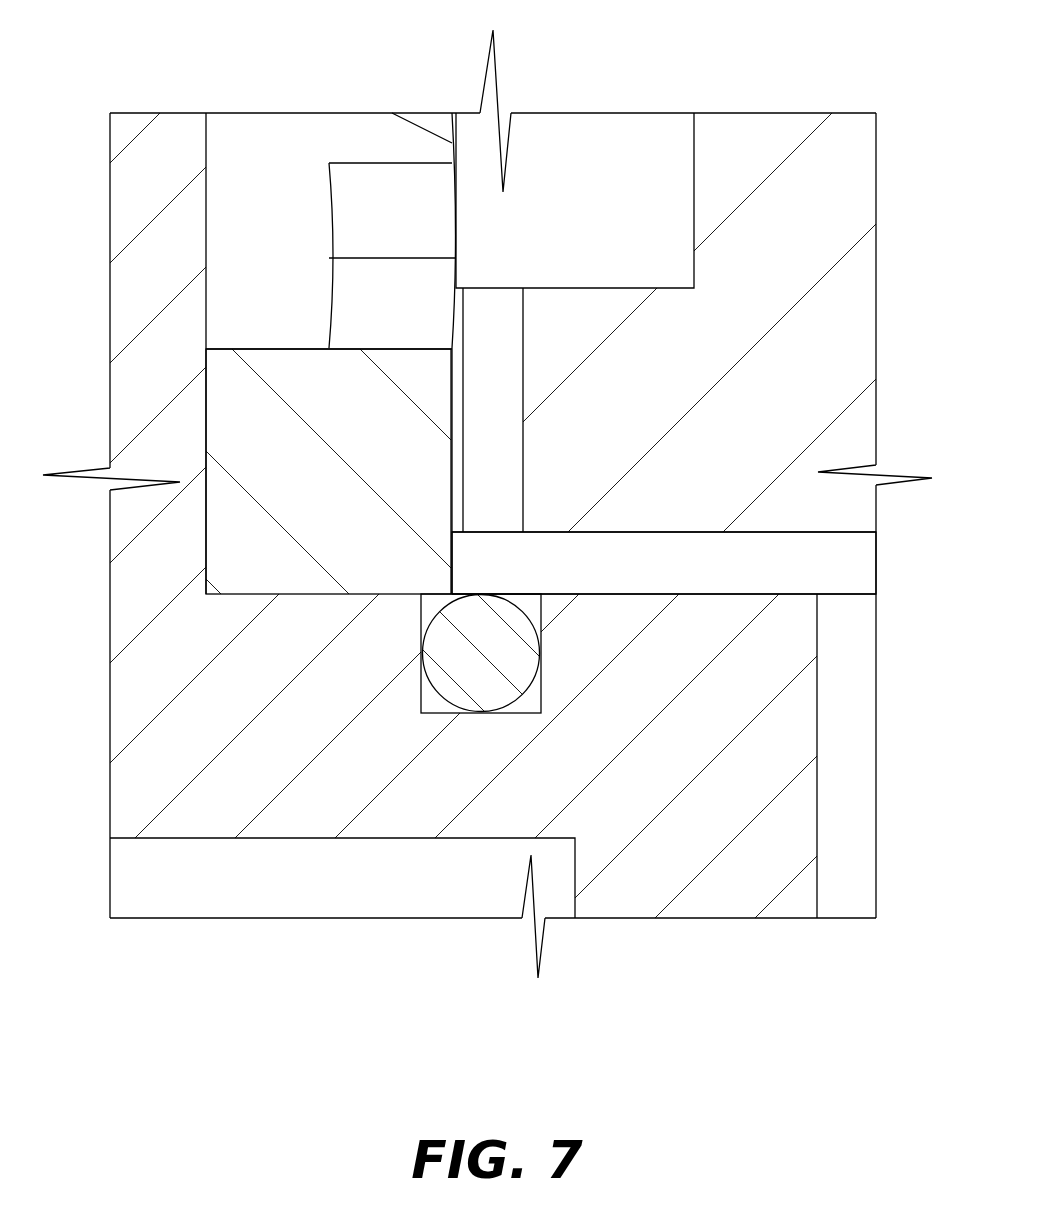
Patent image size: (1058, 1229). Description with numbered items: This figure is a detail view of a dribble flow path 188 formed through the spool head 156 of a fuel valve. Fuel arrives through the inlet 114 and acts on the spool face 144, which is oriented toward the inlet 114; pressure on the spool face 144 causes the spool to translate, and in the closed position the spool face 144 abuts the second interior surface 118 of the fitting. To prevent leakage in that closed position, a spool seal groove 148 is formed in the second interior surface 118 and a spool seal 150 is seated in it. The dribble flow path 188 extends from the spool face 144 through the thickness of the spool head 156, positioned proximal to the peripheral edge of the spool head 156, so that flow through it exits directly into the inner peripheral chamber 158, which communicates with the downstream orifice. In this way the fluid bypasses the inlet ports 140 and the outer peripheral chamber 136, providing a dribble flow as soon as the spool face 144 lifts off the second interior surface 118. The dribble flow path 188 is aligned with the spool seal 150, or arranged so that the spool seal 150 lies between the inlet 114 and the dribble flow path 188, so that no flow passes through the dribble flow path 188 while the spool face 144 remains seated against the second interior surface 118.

The inlet 114 is at (844, 866).
The second interior surface 118 is at (743, 593).
The outer peripheral chamber 136 is at (257, 168).
The inlet ports 140 is at (364, 292).
The spool face 144 is at (843, 533).
The spool seal groove 148 is at (443, 712).
The spool seal 150 is at (512, 686).
The spool head 156 is at (818, 395).
The inner peripheral chamber 158 is at (601, 176).
The dribble flow path 188 is at (513, 385).